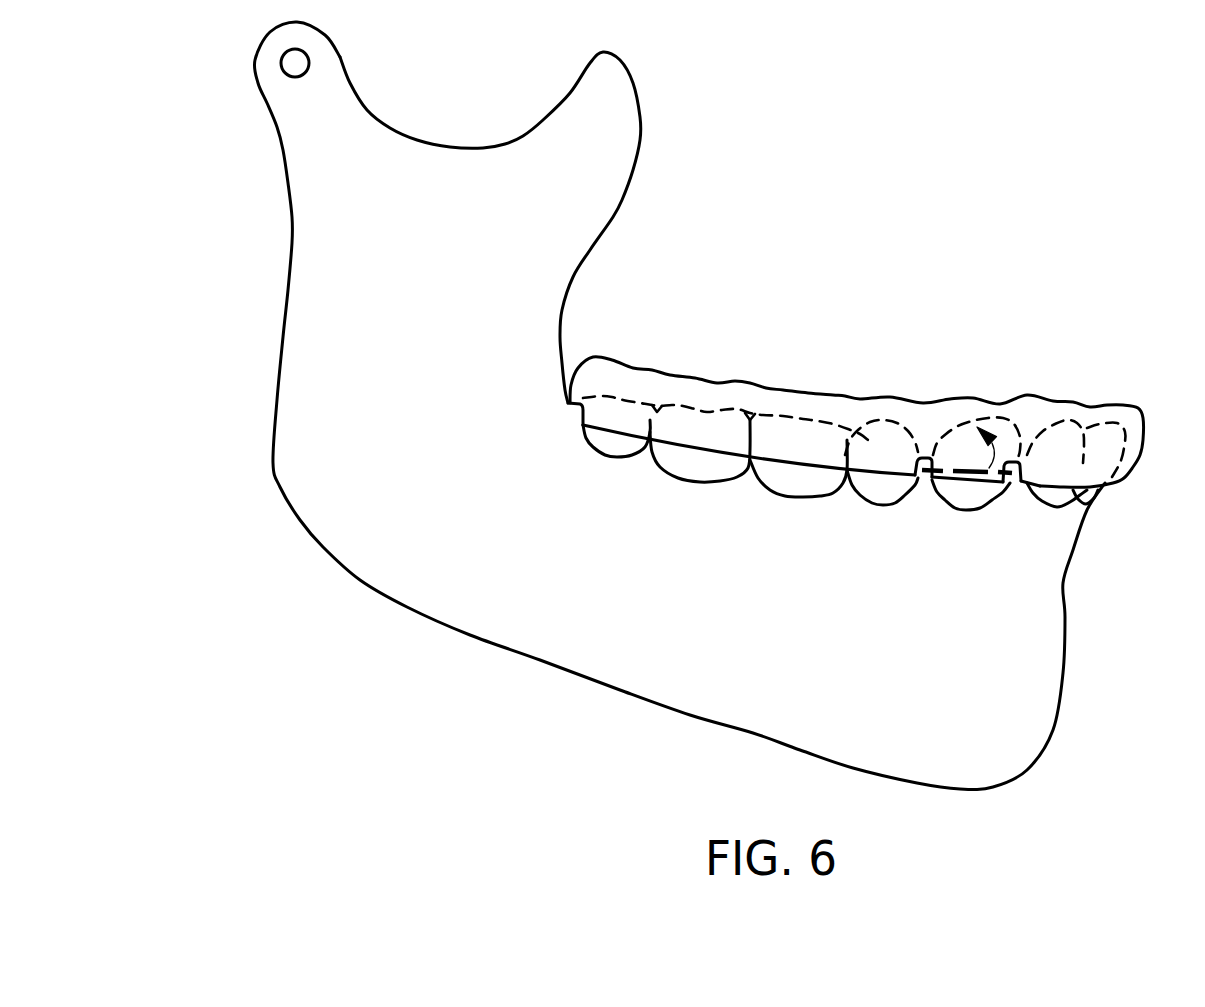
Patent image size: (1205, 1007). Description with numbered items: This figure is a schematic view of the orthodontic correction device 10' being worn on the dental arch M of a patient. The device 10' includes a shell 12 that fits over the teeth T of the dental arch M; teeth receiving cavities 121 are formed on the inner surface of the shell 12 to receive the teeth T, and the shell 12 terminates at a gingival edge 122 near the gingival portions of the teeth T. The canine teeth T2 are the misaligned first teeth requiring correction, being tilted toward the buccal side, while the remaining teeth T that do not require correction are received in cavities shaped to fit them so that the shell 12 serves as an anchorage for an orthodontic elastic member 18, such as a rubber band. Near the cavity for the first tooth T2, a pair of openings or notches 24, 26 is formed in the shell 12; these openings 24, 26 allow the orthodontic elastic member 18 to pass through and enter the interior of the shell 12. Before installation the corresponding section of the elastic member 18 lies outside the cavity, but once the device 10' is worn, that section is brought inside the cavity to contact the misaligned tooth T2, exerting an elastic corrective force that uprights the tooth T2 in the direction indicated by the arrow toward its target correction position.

The orthodontic correction device 10' is at (679, 235).
The shell 12 is at (1141, 407).
The teeth receiving cavities 121 is at (621, 398).
The gingival edge 122 is at (1105, 488).
The orthodontic elastic member 18 is at (967, 466).
The opening 24 is at (923, 482).
The opening 26 is at (1015, 485).
The teeth T is at (610, 443).
The canine teeth T2 is at (952, 497).
The dental arch M is at (1069, 574).